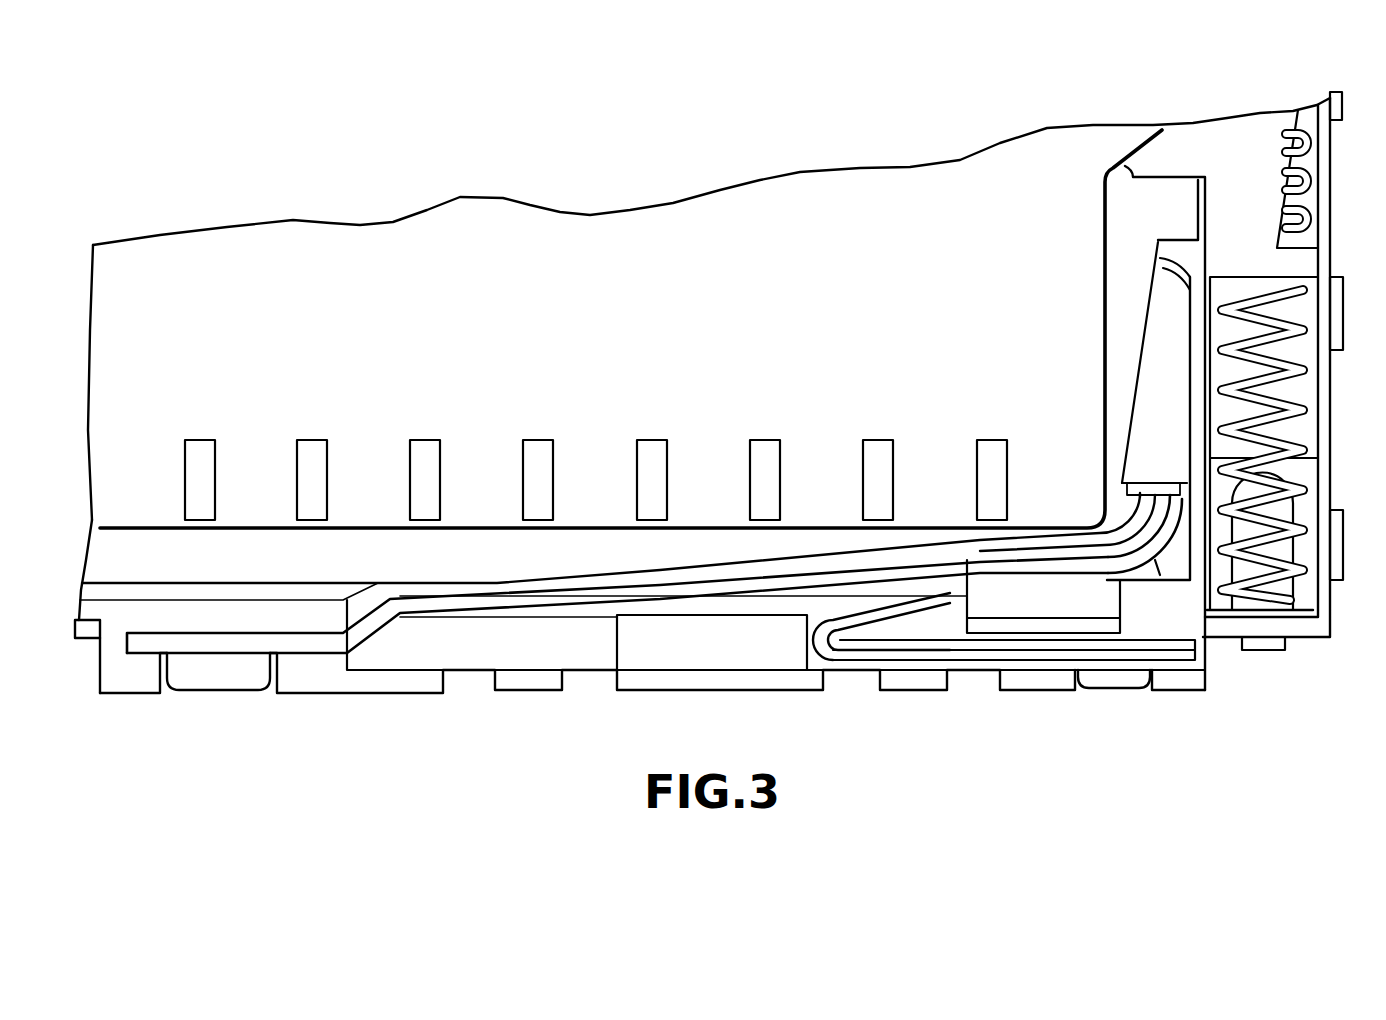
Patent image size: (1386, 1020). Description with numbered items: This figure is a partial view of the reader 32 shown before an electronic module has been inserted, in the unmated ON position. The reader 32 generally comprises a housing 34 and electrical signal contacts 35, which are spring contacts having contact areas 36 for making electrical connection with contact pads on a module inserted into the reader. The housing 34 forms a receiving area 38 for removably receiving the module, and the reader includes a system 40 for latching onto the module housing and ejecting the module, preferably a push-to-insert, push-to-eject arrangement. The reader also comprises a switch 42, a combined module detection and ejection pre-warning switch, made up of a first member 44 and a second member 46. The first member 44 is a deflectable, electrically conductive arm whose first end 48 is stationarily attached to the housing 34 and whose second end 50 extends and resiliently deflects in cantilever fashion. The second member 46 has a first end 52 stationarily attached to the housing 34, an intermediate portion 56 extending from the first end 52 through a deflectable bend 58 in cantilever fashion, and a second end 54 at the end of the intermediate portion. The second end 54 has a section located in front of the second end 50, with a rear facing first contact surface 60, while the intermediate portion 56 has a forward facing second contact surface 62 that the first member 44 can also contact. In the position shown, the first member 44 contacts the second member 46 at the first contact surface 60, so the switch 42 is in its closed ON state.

The reader 32 is at (240, 176).
The housing 34 is at (82, 555).
The electrical signal contacts 35 is at (758, 465).
The contact areas 36 is at (318, 460).
The receiving area 38 is at (508, 210).
The system for latching and ejecting 40 is at (1303, 420).
The switch 42 is at (1125, 705).
The first member 44 is at (437, 598).
The second member 46 is at (888, 613).
The first end 48 is at (212, 683).
The second end 50 is at (1142, 518).
The first end 52 is at (1103, 680).
The second end 54 is at (1167, 487).
The intermediate portion 56 is at (1017, 593).
The deflectable bend 58 is at (817, 635).
The first contact surface 60 is at (1143, 492).
The second contact surface 62 is at (1157, 560).